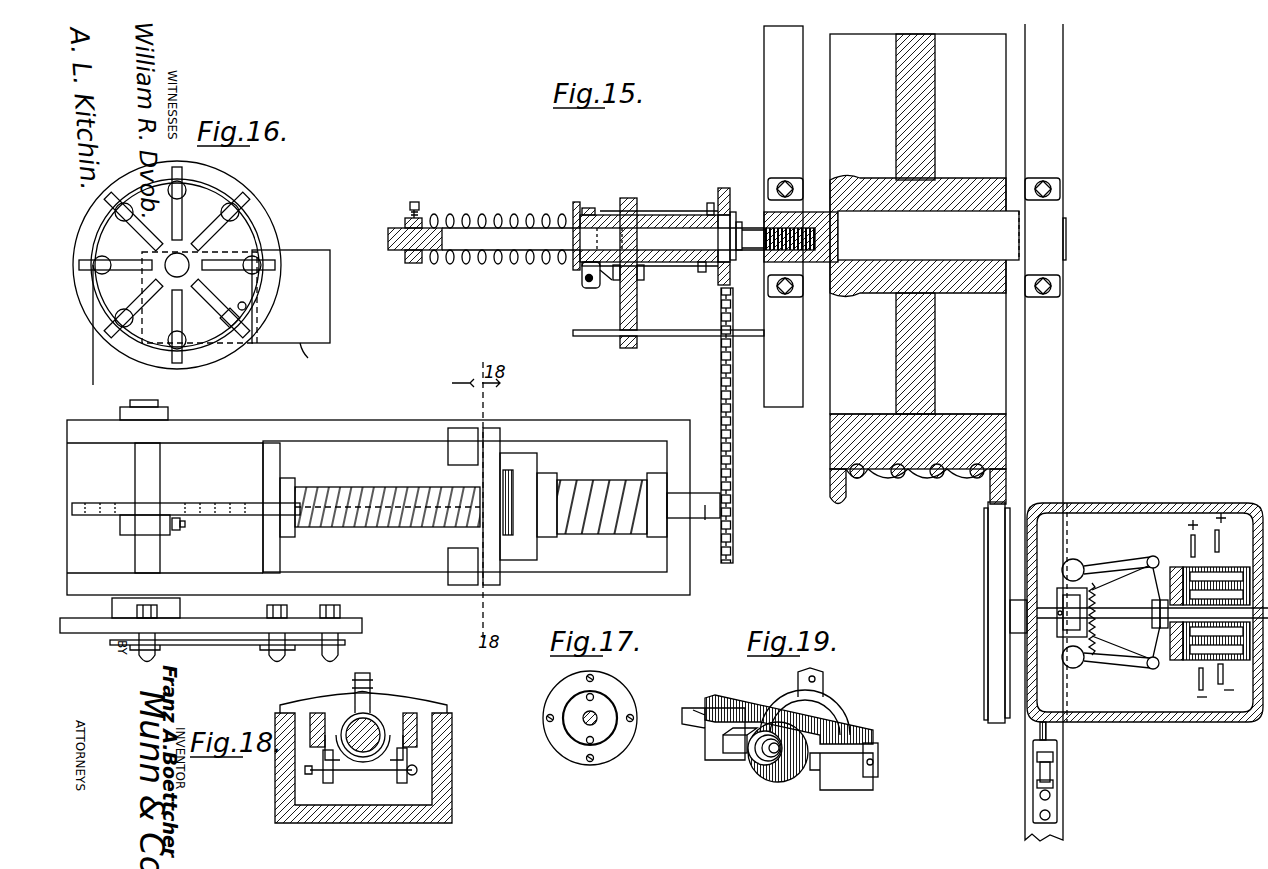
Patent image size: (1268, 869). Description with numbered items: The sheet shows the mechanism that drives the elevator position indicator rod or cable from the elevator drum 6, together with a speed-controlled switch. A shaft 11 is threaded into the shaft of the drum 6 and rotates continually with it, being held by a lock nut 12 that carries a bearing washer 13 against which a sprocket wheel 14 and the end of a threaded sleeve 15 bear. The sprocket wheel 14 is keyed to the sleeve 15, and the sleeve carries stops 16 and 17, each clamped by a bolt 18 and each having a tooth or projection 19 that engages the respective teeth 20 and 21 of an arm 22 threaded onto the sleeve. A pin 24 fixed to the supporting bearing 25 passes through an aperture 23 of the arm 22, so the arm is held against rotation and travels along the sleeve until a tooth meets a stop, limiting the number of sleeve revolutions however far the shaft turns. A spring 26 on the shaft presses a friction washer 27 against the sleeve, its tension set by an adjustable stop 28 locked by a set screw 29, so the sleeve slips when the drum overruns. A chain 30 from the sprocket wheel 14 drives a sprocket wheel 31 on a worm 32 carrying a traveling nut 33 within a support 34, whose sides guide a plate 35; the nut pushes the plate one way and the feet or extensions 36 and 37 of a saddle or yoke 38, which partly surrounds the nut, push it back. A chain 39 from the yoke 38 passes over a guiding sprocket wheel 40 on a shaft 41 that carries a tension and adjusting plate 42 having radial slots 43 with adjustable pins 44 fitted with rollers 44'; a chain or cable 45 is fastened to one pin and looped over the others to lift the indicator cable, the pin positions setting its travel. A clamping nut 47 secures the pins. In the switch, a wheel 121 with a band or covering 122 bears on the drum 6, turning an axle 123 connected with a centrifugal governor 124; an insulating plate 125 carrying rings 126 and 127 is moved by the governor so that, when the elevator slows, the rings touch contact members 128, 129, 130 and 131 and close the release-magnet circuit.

In FIG. 15, the drum 6 is at (830, 437).
In FIG. 15, the shaft 11 is at (480, 254).
In FIG. 15, the lock nut 12 is at (748, 218).
In FIG. 15, the bearing washer 13 is at (728, 275).
In FIG. 15, the sprocket wheel 14 is at (724, 188).
In FIG. 15, the threaded sleeve 15 is at (672, 215).
In FIG. 15, the stop 16 is at (709, 203).
In FIG. 15, the stop 17 is at (590, 208).
In FIG. 15, the bolt 18 is at (582, 284).
In FIG. 15, the tooth or projection 19 is at (596, 284).
In FIG. 15, the tooth 20 is at (612, 280).
In FIG. 15, the tooth 21 is at (644, 272).
In FIG. 15, the arm 22 is at (637, 310).
In FIG. 15, the aperture 23 is at (622, 348).
In FIG. 15, the pin 24 is at (665, 336).
In FIG. 15, the supporting bearing 25 is at (800, 355).
In FIG. 15, the spring 26 is at (497, 216).
In FIG. 15, the friction washer 27 is at (577, 202).
In FIG. 15, the adjustable stop 28 is at (408, 218).
In FIG. 15, the set screw 29 is at (419, 204).
In FIG. 15, the chain 30 is at (733, 432).
In FIG. 15, the sprocket wheel 31 is at (733, 515).
In FIG. 15, the worm 32 is at (705, 520).
In FIG. 18, the worm 32 is at (372, 720).
In FIG. 15, the traveling nut 33 is at (555, 480).
In FIG. 15, the support 34 is at (627, 585).
In FIG. 16, the support 34 is at (314, 356).
In FIG. 18, the support 34 is at (440, 800).
In FIG. 15, the plate 35 is at (492, 440).
In FIG. 18, the plate 35 is at (330, 705).
In FIG. 19, the plate 35 is at (745, 700).
In FIG. 15, the foot or extension 36 is at (455, 453).
In FIG. 19, the foot or extension 36 is at (690, 718).
In FIG. 15, the foot or extension 37 is at (450, 565).
In FIG. 19, the foot or extension 37 is at (840, 785).
In FIG. 15, the saddle or yoke 38 is at (520, 552).
In FIG. 18, the saddle or yoke 38 is at (417, 730).
In FIG. 19, the saddle or yoke 38 is at (845, 715).
In FIG. 15, the chain 39 is at (365, 490).
In FIG. 15, the guiding sprocket wheel 40 is at (175, 505).
In FIG. 15, the shaft 41 is at (147, 563).
In FIG. 15, the tension and adjusting plate 42 is at (362, 627).
In FIG. 16, the tension and adjusting plate 42 is at (278, 232).
In FIG. 16, the radial slots 43 is at (240, 212).
In FIG. 15, the adjustable pins 44 is at (238, 659).
In FIG. 16, the adjustable pins 44 is at (183, 251).
In FIG. 15, the rollers 44' is at (251, 651).
In FIG. 15, the chain or cable 45 is at (242, 658).
In FIG. 16, the chain or cable 45 is at (275, 300).
In FIG. 15, the nut 47 is at (150, 647).
In FIG. 15, the wheel 121 is at (985, 593).
In FIG. 15, the band or covering 122 is at (996, 540).
In FIG. 15, the axle 123 is at (1112, 570).
In FIG. 15, the governor 124 is at (1115, 660).
In FIG. 15, the insulating plate 125 is at (1166, 640).
In FIG. 15, the ring 126 is at (1176, 567).
In FIG. 17, the ring 126 is at (622, 738).
In FIG. 15, the ring 127 is at (1150, 612).
In FIG. 17, the ring 127 is at (600, 710).
In FIG. 15, the contact member 128 is at (1230, 567).
In FIG. 15, the contact member 129 is at (1219, 552).
In FIG. 15, the contact member 130 is at (1253, 695).
In FIG. 15, the contact member 131 is at (1232, 678).